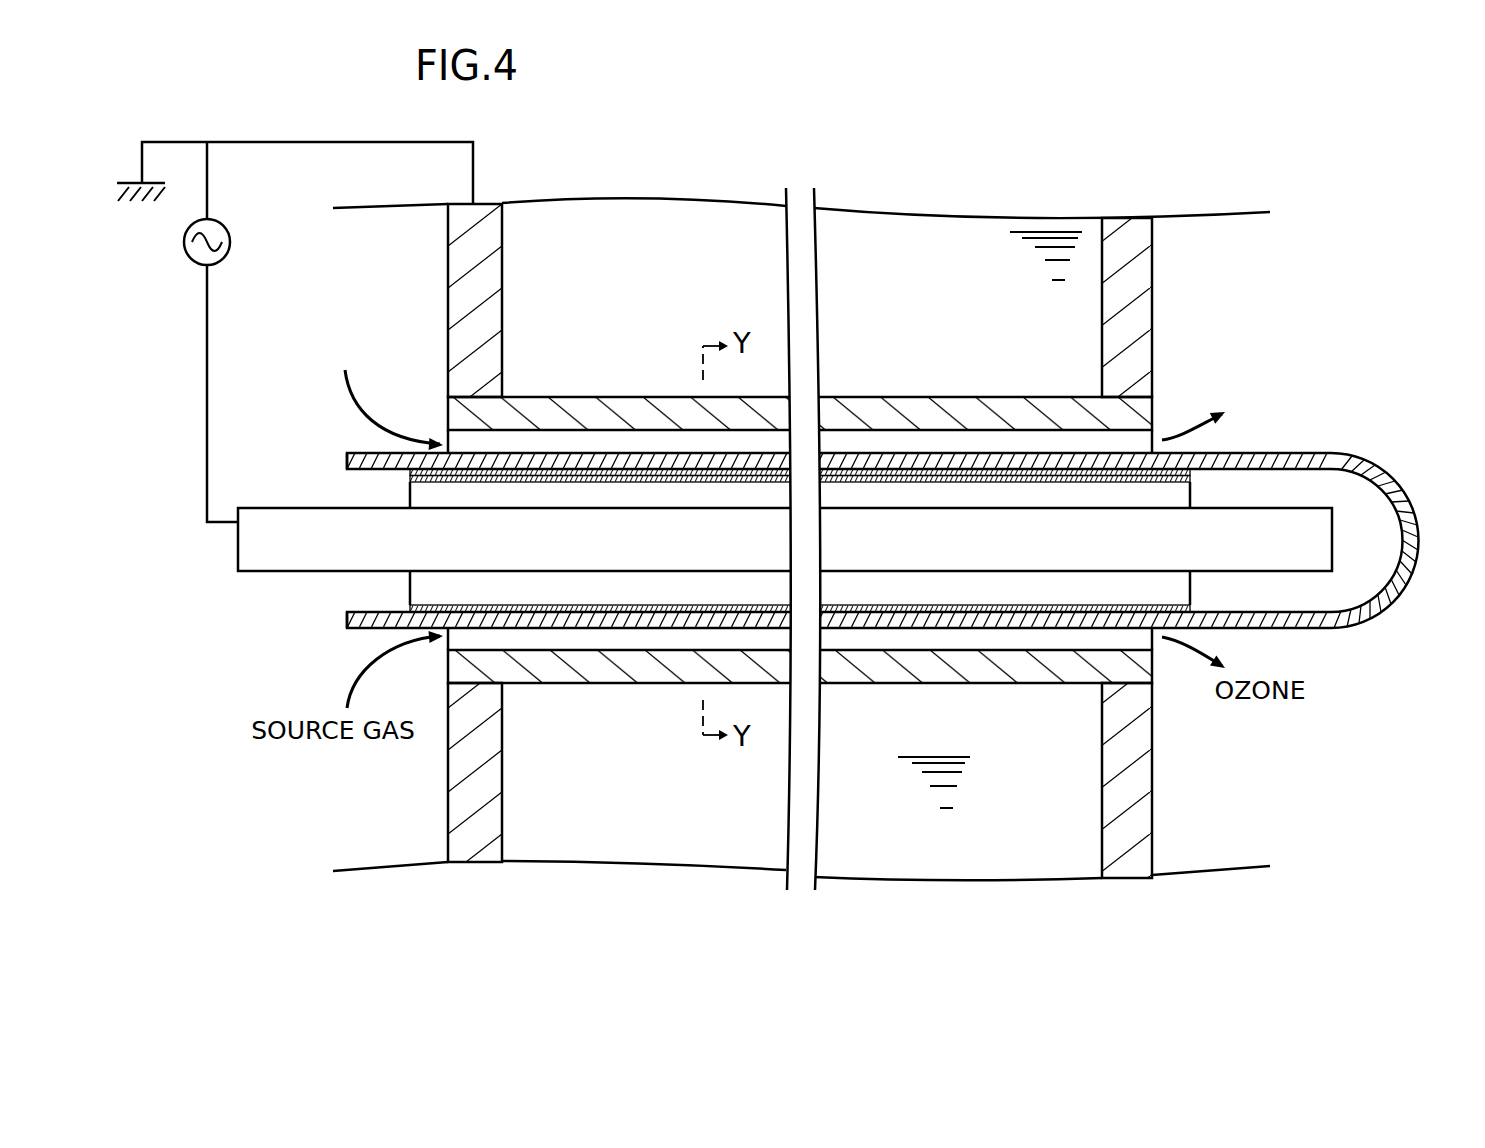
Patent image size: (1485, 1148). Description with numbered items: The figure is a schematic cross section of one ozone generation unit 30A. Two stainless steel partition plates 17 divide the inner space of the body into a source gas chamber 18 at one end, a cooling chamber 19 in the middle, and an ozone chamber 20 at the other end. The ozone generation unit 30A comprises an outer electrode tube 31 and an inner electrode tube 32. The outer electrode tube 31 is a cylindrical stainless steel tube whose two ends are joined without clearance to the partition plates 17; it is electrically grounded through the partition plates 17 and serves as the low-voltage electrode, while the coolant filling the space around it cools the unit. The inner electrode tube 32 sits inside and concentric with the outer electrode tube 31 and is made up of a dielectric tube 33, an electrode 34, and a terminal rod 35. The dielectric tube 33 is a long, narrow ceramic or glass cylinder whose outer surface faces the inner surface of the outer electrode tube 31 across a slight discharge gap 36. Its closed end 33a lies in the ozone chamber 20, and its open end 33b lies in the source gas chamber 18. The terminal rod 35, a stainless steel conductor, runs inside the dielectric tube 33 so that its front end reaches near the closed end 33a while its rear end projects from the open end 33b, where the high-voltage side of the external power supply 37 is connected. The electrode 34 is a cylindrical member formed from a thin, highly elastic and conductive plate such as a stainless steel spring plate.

The partition plate 17 is at (458, 827).
The source gas chamber 18 is at (403, 277).
The cooling chamber 19 is at (655, 277).
The ozone chamber 20 is at (1225, 277).
The ozone generation unit 30A is at (1353, 343).
The outer electrode tube 31 is at (1143, 410).
The inner electrode tube 32 is at (1260, 450).
The dielectric tube 33 is at (862, 458).
The closed end 33a is at (1422, 533).
The open end 33b is at (347, 613).
The electrode 34 is at (925, 495).
The terminal rod 35 is at (1028, 528).
The discharge gap 36 is at (597, 642).
The external power supply 37 is at (183, 252).